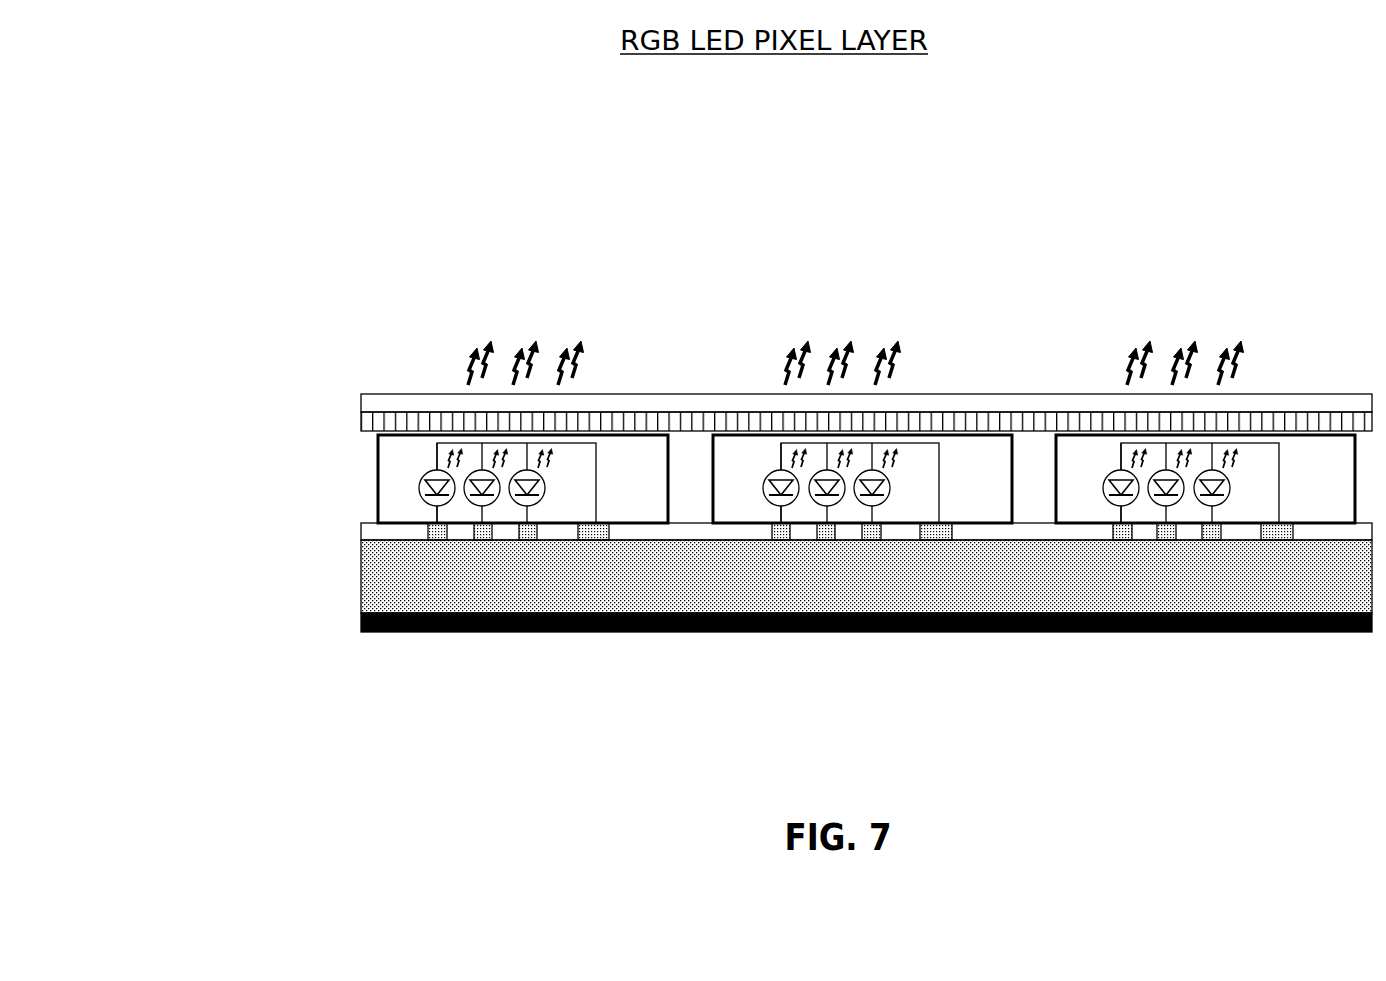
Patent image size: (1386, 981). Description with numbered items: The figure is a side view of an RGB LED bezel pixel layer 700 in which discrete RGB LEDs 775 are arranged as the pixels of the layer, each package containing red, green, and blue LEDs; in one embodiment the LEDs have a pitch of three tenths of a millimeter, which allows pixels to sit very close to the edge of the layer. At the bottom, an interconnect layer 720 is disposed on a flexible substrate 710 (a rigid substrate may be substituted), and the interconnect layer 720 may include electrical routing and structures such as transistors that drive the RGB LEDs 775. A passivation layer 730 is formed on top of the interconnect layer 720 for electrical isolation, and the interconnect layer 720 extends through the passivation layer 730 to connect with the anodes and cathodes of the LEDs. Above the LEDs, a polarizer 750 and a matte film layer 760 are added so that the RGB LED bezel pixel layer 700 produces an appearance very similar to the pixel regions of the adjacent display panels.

The RGB LED bezel pixel layer 700 is at (492, 187).
The flexible substrate 710 is at (361, 625).
The interconnect layer 720 is at (387, 576).
The passivation layer 730 is at (368, 533).
The polarizer 750 is at (361, 421).
The matte film layer 760 is at (361, 405).
The RGB LEDs 775 is at (1331, 503).